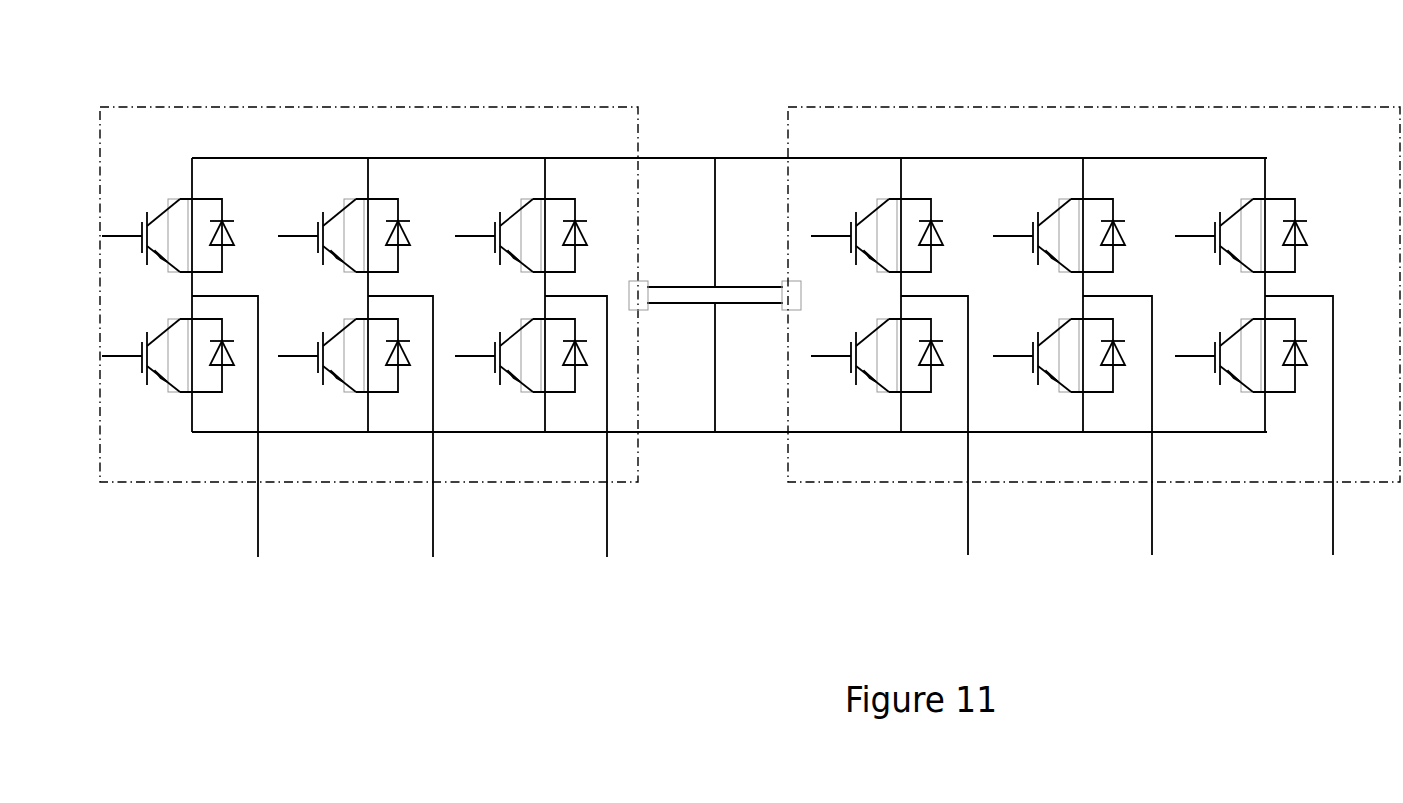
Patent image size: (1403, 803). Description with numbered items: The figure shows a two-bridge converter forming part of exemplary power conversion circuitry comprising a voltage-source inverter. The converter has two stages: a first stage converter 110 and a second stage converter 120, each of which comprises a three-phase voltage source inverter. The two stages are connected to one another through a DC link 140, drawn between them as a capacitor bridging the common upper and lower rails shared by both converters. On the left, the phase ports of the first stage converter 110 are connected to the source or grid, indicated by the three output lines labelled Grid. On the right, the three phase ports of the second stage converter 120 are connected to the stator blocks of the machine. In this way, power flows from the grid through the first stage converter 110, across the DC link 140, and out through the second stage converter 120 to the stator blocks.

The first stage converter 110 is at (525, 107).
The second stage converter 120 is at (1212, 107).
The DC link 140 is at (673, 158).